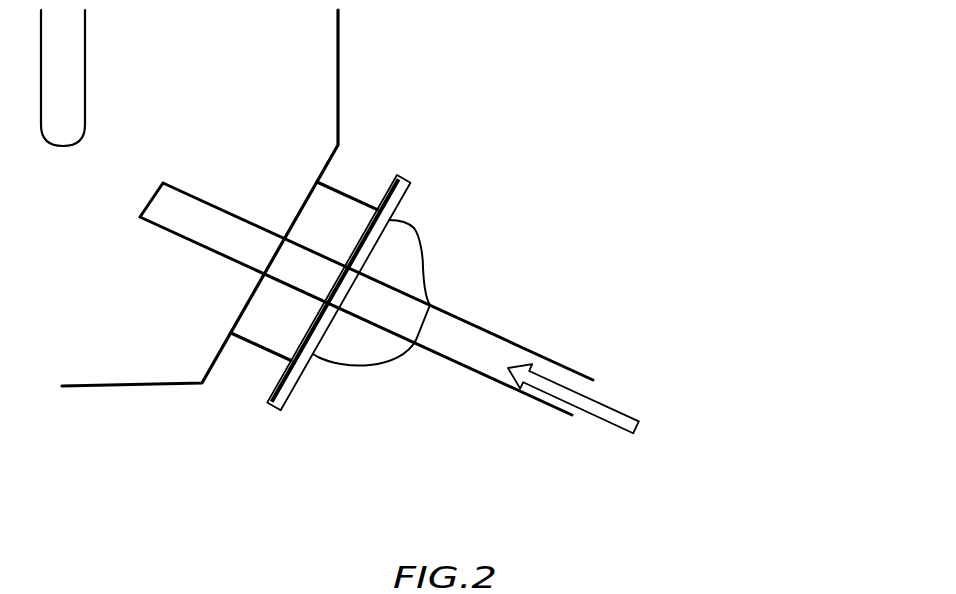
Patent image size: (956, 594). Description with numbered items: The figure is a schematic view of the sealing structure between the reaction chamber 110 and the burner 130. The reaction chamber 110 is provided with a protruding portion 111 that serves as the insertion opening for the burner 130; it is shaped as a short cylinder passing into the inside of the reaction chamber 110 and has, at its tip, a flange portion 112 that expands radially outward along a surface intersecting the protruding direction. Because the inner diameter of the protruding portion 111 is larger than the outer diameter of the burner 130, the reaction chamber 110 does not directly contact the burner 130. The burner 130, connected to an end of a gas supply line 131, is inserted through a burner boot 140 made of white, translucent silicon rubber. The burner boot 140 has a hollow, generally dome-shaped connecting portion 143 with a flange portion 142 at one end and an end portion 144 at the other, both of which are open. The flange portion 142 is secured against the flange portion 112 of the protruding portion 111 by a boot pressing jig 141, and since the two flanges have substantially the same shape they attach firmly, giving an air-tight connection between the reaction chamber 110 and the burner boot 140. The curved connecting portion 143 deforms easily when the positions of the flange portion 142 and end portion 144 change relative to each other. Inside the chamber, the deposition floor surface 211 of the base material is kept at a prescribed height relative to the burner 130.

The reaction chamber 110 is at (338, 80).
The protruding portion 111 is at (345, 195).
The flange portion 112 is at (283, 369).
The burner 130 is at (199, 200).
The gas supply line 131 is at (553, 362).
The burner boot 140 is at (388, 289).
The boot pressing jig 141 is at (420, 193).
The flange portion 142 is at (413, 222).
The connecting portion 143 is at (428, 267).
The end portion 144 is at (430, 305).
The deposition floor surface 211 is at (85, 78).